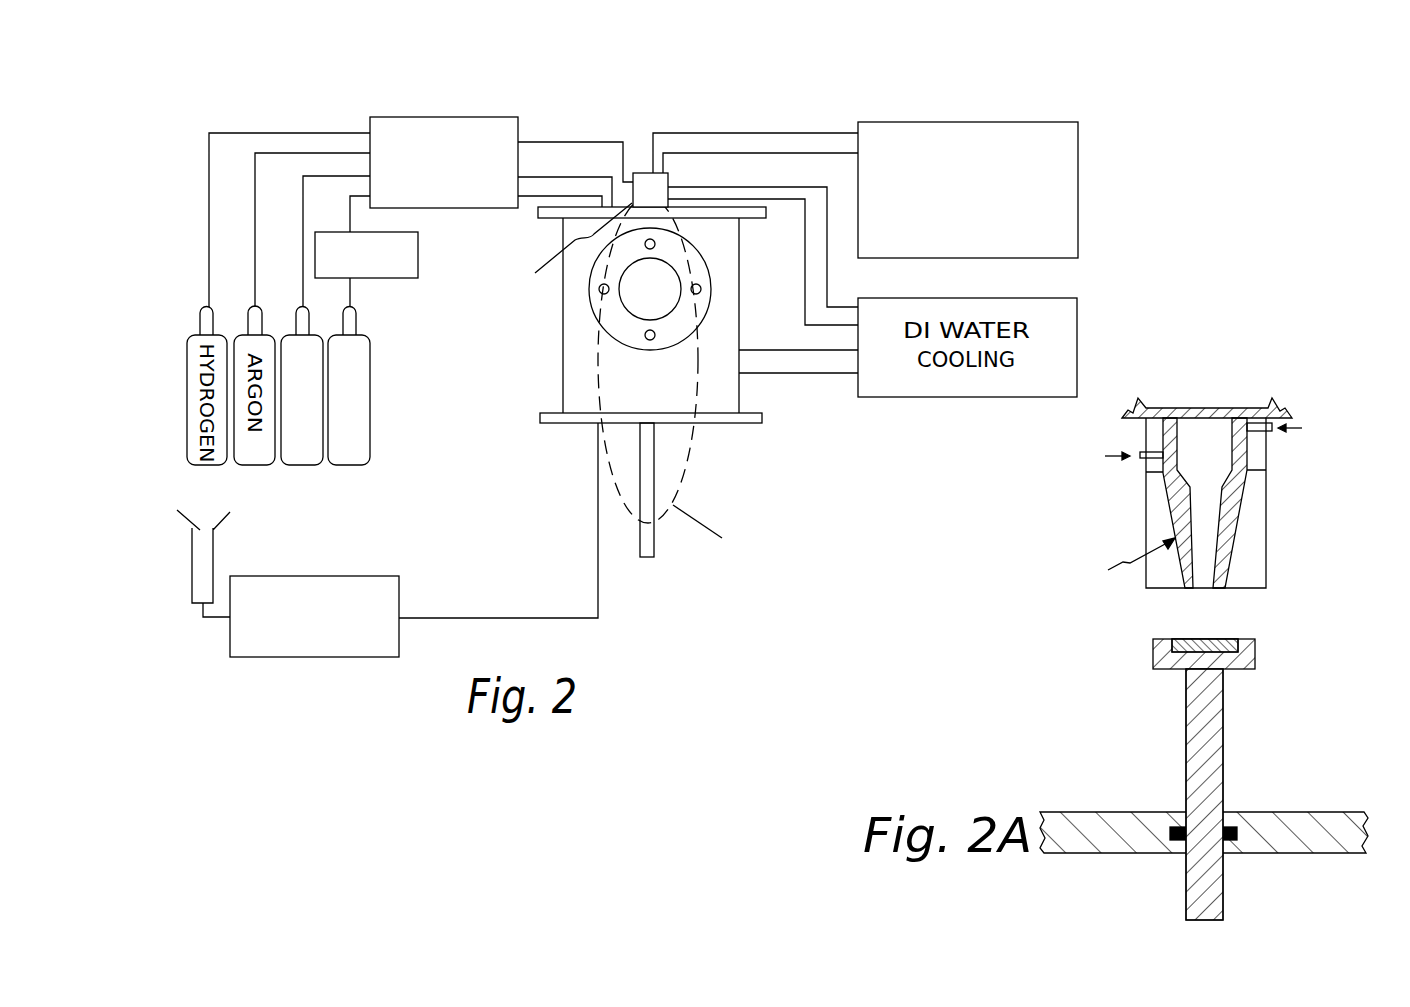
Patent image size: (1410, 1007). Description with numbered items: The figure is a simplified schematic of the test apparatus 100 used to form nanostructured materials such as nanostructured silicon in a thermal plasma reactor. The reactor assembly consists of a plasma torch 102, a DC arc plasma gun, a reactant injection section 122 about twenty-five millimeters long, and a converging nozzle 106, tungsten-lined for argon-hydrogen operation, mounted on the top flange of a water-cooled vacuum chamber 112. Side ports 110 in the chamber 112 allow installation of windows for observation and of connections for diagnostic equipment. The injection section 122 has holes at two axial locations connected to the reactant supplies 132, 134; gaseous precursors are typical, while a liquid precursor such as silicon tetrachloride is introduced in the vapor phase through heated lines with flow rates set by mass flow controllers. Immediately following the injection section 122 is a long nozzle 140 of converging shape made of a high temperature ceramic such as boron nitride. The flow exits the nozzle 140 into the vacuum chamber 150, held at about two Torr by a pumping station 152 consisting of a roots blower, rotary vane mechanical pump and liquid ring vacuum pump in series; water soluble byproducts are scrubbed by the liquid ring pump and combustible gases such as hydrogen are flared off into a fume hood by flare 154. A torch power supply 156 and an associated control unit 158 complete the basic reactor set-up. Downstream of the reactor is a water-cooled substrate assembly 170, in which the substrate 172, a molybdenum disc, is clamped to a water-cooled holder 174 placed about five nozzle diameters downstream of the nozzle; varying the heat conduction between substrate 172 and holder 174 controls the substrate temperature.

In FIG. 2, the apparatus 100 is at (1114, 95).
In FIG. 2, the control unit 158 is at (520, 128).
In FIG. 2, the Miller power supply 156 is at (897, 122).
In FIG. 2, the side ports 110 is at (643, 302).
In FIG. 2, the chamber 112 is at (728, 438).
In FIG. 2, the reactant supply 132 is at (370, 445).
In FIG. 2, the reactant supply 134 is at (318, 463).
In FIG. 2, the flare 154 is at (192, 532).
In FIG. 2, the pumping station 152 is at (283, 645).
In FIG. 2A, the plasma torch 102 is at (1250, 393).
In FIG. 2A, the injection section 122 is at (1220, 455).
In FIG. 2A, the converging nozzle 106 is at (1275, 521).
In FIG. 2A, the nozzle 140 is at (1207, 545).
In FIG. 2A, the substrate 172 is at (1222, 640).
In FIG. 2A, the vacuum chamber 150 is at (1220, 754).
In FIG. 2A, the substrate assembly 170 is at (1176, 719).
In FIG. 2A, the substrate holder 174 is at (1223, 762).